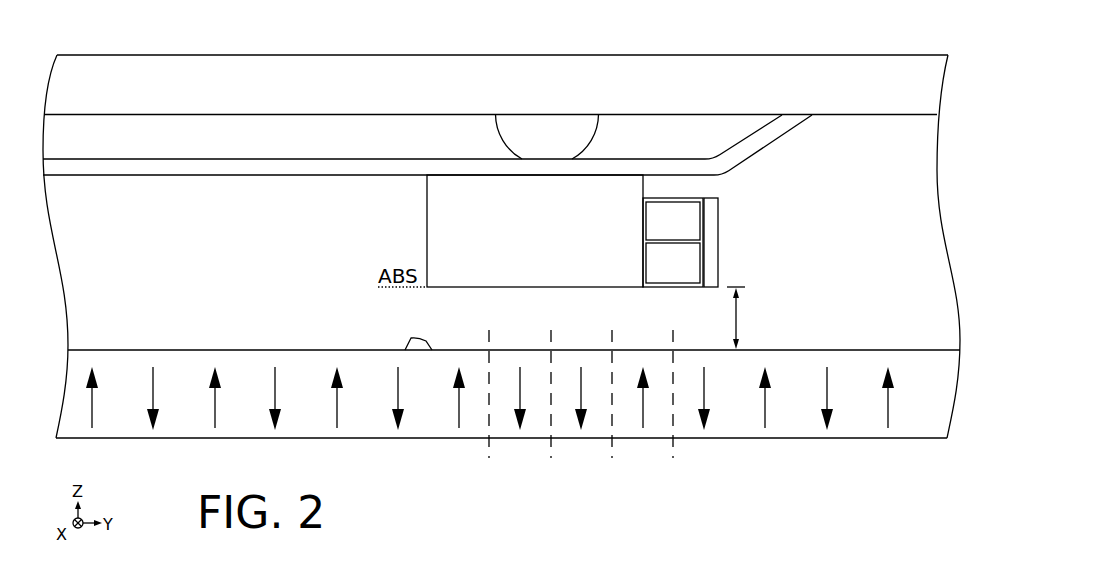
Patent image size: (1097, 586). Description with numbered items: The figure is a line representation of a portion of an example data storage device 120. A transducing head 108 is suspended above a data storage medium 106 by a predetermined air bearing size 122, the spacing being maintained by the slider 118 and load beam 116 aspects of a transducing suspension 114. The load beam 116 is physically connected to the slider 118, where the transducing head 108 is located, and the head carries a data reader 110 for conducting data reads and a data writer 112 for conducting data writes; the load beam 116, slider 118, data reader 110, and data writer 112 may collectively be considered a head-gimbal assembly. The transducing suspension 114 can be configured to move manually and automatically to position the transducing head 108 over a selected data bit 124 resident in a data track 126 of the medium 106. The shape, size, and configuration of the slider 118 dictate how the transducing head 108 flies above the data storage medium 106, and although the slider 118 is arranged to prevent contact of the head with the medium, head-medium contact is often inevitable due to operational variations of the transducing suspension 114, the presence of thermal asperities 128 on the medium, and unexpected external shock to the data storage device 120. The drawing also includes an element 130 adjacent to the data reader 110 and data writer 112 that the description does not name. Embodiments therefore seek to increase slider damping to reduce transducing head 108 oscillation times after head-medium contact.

The data storage medium 106 is at (175, 348).
The transducing head 108 is at (636, 242).
The data reader 110 is at (694, 231).
The data writer 112 is at (673, 263).
The transducing suspension 114 is at (314, 190).
The load beam 116 is at (124, 94).
The slider 118 is at (555, 242).
The data storage device 120 is at (899, 33).
The air bearing size 122 is at (752, 318).
The data bit 124 is at (580, 446).
The data track 126 is at (644, 463).
The thermal asperity 128 is at (399, 338).
The contact sensor 130 is at (719, 237).